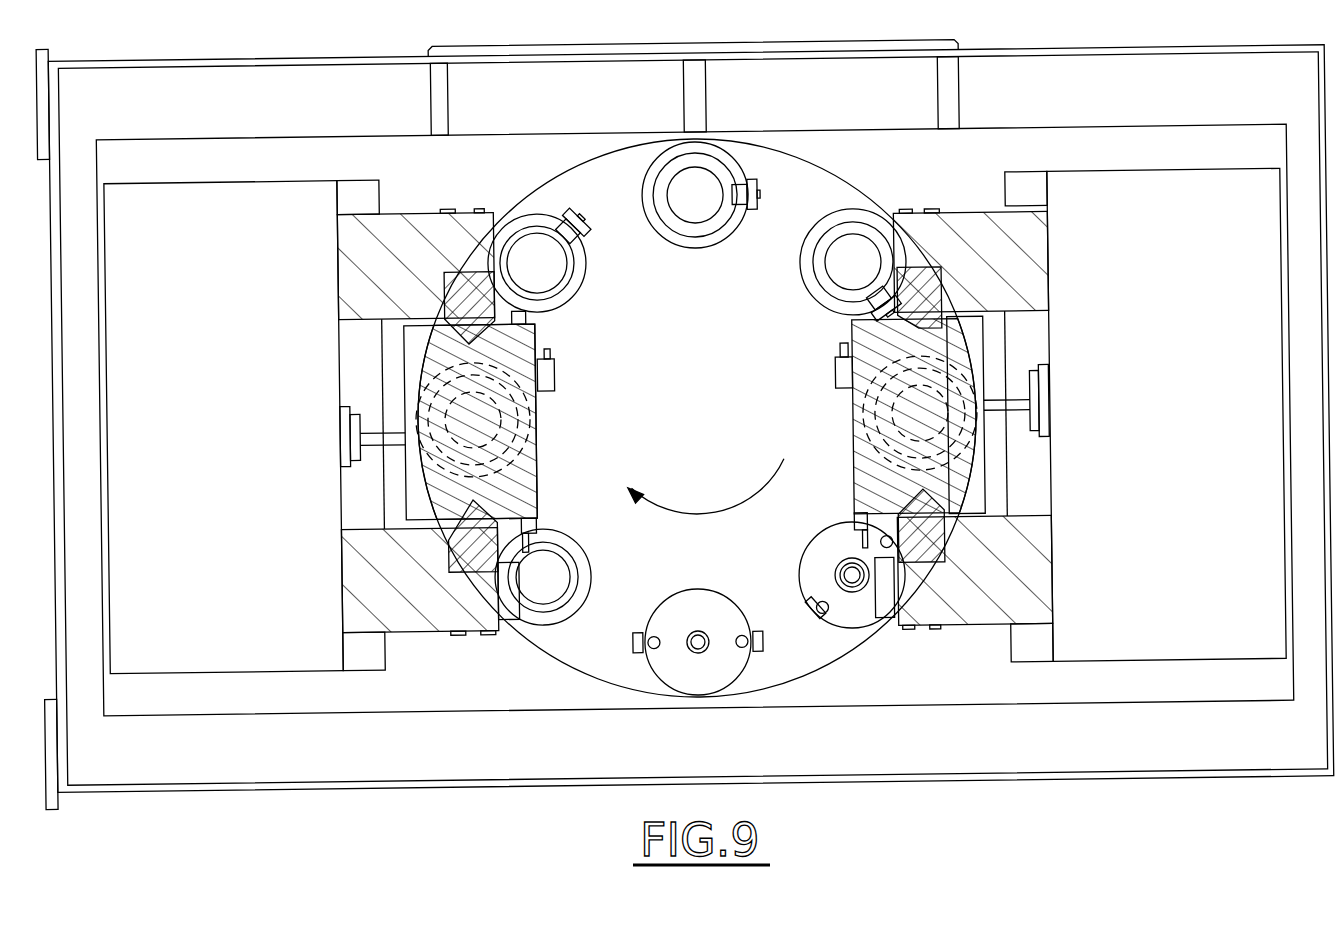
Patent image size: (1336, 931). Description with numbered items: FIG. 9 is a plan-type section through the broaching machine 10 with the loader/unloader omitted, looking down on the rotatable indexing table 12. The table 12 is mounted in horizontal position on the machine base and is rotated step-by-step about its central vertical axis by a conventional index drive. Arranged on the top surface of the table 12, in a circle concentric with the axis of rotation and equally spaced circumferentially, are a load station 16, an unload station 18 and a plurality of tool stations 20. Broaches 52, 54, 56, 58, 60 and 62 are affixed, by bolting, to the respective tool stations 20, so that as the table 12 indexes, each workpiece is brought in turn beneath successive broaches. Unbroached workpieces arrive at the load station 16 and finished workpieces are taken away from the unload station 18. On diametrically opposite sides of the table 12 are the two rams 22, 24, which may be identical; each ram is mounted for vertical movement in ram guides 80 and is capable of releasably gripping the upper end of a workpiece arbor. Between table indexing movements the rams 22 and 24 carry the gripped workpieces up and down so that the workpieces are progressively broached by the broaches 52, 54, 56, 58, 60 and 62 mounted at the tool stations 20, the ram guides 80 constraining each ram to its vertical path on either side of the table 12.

The machine 10 is at (190, 34).
The rotatable indexing table 12 is at (817, 178).
The load station 16 is at (824, 540).
The unload station 18 is at (691, 597).
The tool stations 20 is at (552, 222).
The ram 22 is at (538, 451).
The ram 24 is at (851, 399).
The broach 52 is at (849, 430).
The broach 54 is at (822, 278).
The broach 56 is at (706, 231).
The broach 58 is at (572, 279).
The broach 60 is at (538, 411).
The broach 62 is at (568, 568).
The ram guides 80 is at (934, 290).